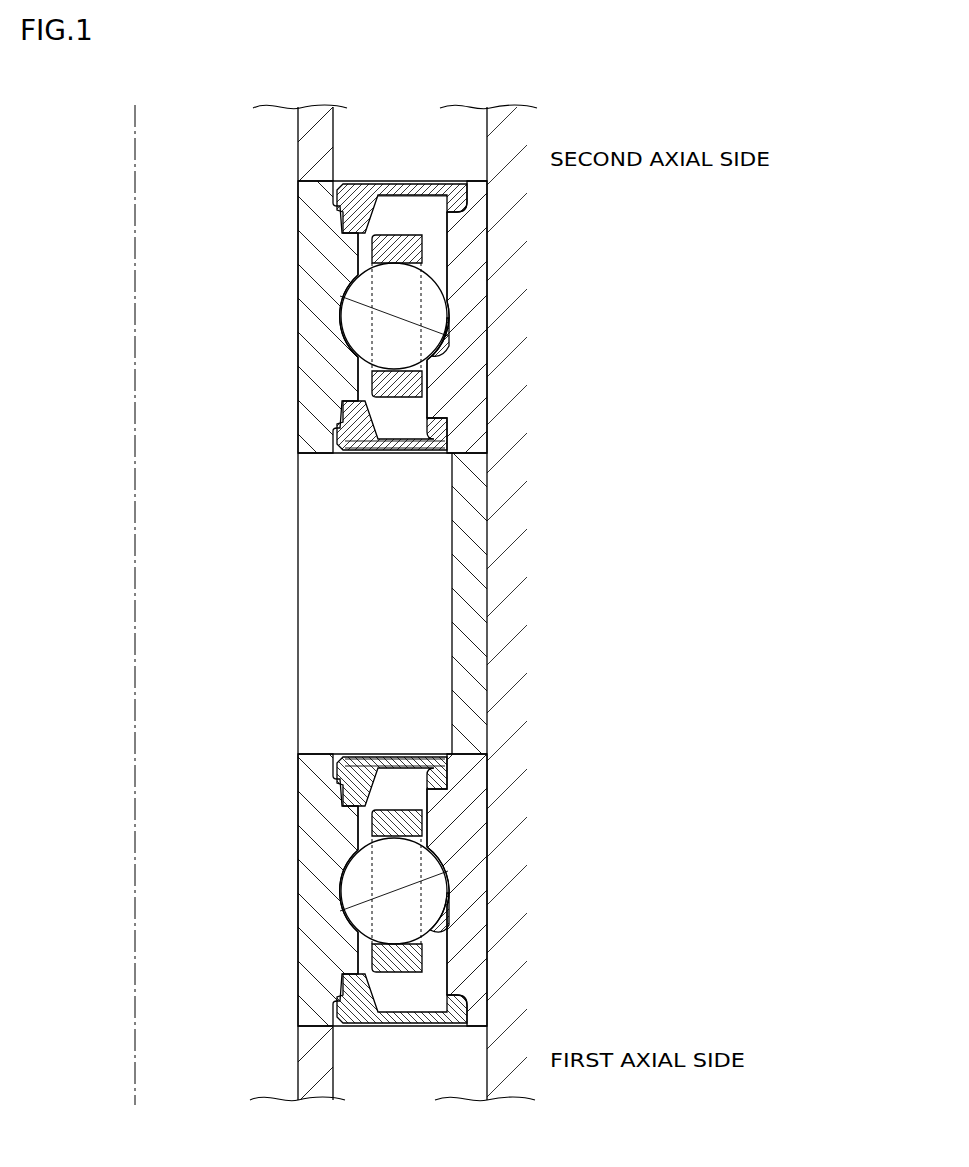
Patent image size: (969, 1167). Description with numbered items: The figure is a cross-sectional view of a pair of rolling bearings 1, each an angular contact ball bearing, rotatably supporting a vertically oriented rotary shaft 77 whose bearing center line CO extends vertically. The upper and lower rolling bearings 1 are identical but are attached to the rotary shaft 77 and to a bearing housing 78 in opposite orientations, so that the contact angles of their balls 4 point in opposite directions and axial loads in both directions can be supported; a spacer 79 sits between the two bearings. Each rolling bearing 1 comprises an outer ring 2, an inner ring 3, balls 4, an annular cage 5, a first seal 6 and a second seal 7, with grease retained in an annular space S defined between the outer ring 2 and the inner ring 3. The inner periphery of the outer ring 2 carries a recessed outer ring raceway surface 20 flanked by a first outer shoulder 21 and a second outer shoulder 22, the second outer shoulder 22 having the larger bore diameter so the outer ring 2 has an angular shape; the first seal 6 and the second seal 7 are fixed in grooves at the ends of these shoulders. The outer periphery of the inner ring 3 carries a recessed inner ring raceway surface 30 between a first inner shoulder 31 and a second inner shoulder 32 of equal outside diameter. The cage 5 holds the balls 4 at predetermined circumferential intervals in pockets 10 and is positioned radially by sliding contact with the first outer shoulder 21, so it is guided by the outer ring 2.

The rolling bearing 1 is at (487, 303).
The outer ring 2 is at (483, 239).
The inner ring 3 is at (336, 284).
The ball 4 is at (362, 331).
The annular cage 5 is at (345, 418).
The first seal 6 is at (405, 448).
The second seal 7 is at (437, 190).
The pocket 10 is at (440, 358).
The outer ring raceway surface 20 is at (445, 325).
The first outer shoulder 21 is at (455, 393).
The second outer shoulder 22 is at (458, 258).
The inner ring raceway surface 30 is at (340, 306).
The first inner shoulder 31 is at (350, 382).
The second inner shoulder 32 is at (340, 252).
The rotary shaft 77 is at (315, 122).
The bearing housing 78 is at (510, 125).
The spacer 79 is at (468, 571).
The annular space S is at (412, 211).
The bearing center line CO is at (132, 160).